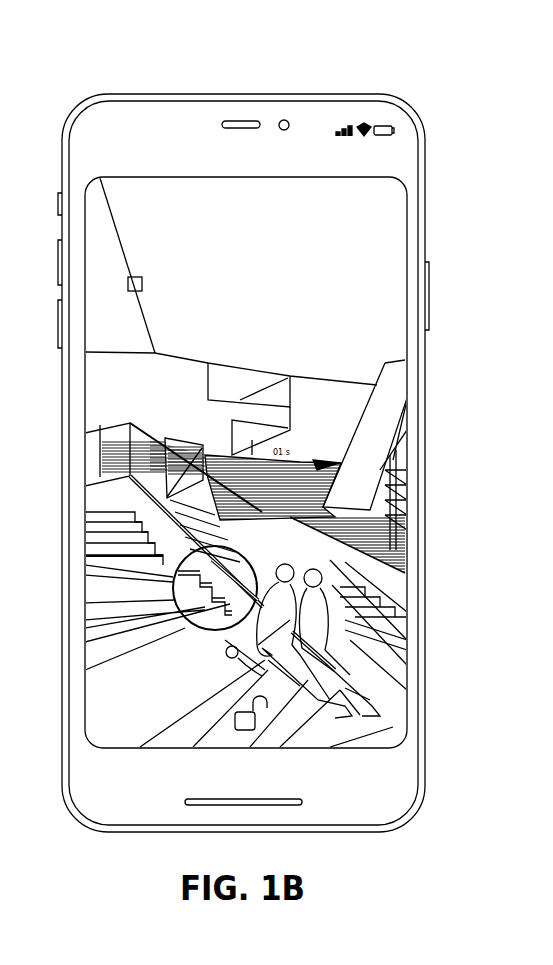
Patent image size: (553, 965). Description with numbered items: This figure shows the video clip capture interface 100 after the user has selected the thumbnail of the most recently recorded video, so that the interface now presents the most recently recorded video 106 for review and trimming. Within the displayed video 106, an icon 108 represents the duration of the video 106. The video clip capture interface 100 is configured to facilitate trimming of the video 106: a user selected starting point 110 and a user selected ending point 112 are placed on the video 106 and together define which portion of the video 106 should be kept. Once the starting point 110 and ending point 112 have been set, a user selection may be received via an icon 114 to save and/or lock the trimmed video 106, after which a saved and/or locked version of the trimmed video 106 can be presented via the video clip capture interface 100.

The video clip capture interface 100 is at (341, 75).
The most recently recorded video 106 is at (125, 213).
The icon 108 is at (176, 586).
The user selected starting point 110 is at (372, 510).
The user selected ending point 112 is at (338, 640).
The icon 114 is at (255, 717).